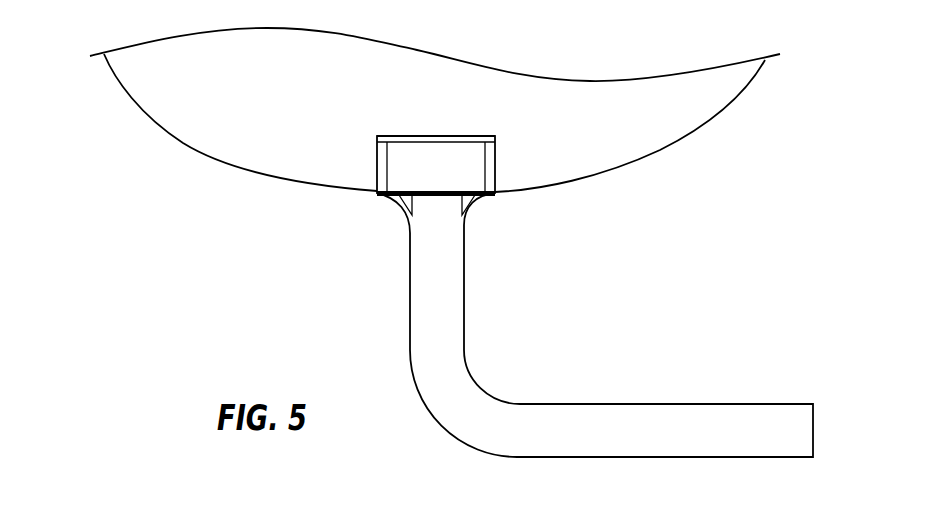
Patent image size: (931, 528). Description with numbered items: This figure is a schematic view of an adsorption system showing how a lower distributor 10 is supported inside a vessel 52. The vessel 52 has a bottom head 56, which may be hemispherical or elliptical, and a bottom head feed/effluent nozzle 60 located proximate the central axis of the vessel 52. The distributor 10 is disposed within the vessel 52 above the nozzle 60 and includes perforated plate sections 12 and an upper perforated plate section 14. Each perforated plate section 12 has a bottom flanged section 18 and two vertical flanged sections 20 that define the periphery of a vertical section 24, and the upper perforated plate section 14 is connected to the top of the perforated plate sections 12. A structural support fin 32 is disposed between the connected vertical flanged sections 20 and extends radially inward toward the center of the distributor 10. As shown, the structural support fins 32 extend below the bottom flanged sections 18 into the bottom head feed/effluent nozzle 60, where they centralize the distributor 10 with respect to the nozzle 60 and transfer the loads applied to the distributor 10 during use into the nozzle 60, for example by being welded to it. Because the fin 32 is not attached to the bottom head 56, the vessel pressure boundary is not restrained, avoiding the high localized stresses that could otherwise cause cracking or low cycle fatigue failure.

The distributor 10 is at (488, 127).
The perforated plate section 12 is at (368, 161).
The upper perforated plate section 14 is at (440, 135).
The bottom flanged section 18 is at (372, 197).
The vertical flanged section 20 is at (382, 137).
The vertical section 24 is at (497, 168).
The structural support fin 32 is at (475, 200).
The vessel 52 is at (112, 88).
The bottom head 56 is at (182, 143).
The bottom head feed/effluent nozzle 60 is at (410, 235).